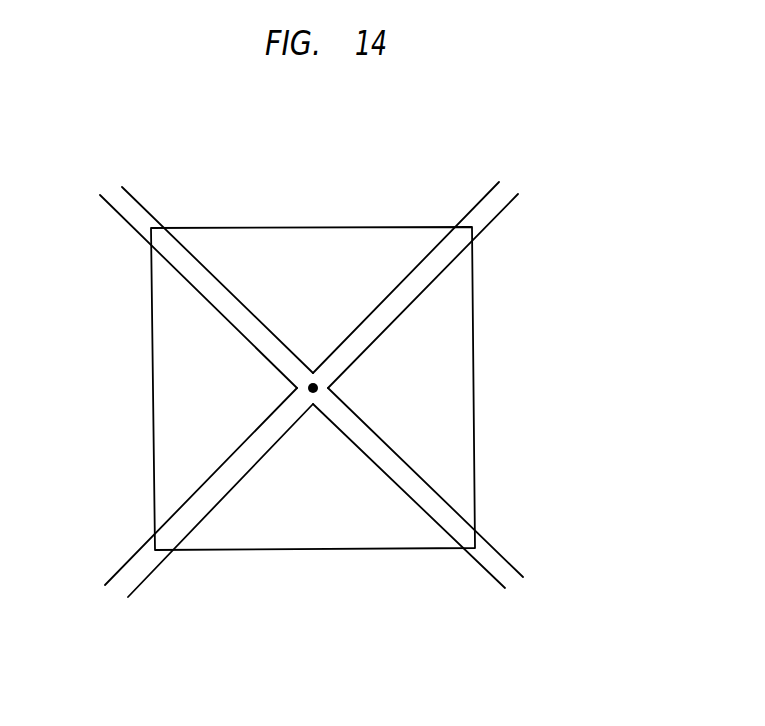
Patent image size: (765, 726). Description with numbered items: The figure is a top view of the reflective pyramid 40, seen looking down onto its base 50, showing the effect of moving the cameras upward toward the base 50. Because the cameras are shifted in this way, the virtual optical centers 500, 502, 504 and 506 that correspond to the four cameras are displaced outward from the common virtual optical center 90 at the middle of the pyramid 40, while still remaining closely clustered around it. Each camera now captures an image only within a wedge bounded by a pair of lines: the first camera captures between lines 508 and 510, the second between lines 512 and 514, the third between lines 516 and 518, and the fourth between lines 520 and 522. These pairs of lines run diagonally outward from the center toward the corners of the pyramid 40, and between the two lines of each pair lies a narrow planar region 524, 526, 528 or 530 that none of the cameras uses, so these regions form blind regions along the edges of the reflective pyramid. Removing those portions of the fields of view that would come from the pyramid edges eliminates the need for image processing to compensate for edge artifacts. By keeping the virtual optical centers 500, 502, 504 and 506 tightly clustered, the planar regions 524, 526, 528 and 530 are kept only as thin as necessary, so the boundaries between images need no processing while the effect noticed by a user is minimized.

The pyramid 40 is at (345, 226).
The base 50 is at (386, 250).
The virtual optical center 90 is at (318, 392).
The virtual optical center 500 is at (308, 388).
The virtual optical center 502 is at (313, 404).
The virtual optical center 504 is at (330, 388).
The virtual optical center 506 is at (314, 381).
The line 508 is at (122, 217).
The line 510 is at (128, 563).
The line 512 is at (143, 580).
The line 514 is at (493, 577).
The line 516 is at (508, 558).
The line 518 is at (501, 213).
The line 520 is at (483, 190).
The line 522 is at (136, 199).
The planar region 524 is at (119, 198).
The planar region 526 is at (125, 583).
The planar region 528 is at (508, 578).
The planar region 530 is at (507, 192).